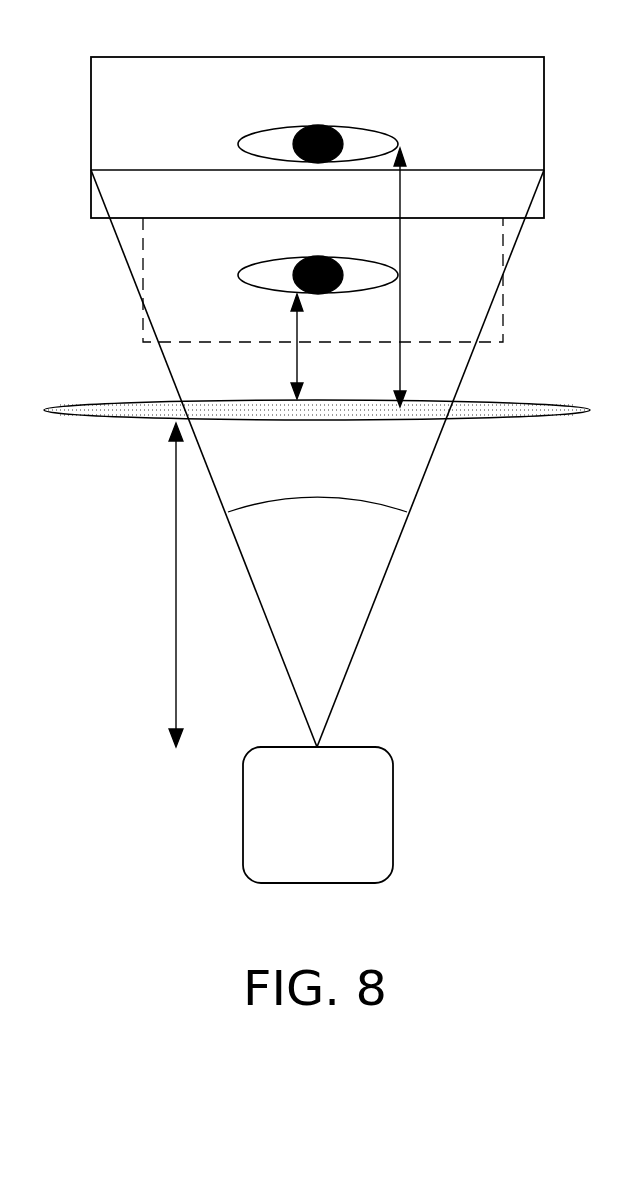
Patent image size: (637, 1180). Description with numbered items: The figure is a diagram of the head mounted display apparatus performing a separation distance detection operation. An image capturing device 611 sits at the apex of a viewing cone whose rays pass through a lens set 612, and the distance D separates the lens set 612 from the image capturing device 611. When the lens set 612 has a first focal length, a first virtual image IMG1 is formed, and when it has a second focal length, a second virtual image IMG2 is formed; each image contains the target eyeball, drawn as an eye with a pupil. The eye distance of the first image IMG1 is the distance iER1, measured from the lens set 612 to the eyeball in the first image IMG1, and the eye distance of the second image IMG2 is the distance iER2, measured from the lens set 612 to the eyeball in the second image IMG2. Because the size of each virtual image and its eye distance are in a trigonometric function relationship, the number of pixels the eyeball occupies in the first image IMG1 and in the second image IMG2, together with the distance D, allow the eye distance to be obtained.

The second image IMG2 is at (507, 57).
The first image IMG1 is at (503, 313).
The eye distance of image IMG2 iER2 is at (425, 277).
The eye distance of image IMG1 iER1 is at (273, 346).
The lens set 612 is at (517, 408).
The image capturing device 611 is at (395, 815).
The distance between lens set and image capturing device D is at (165, 585).